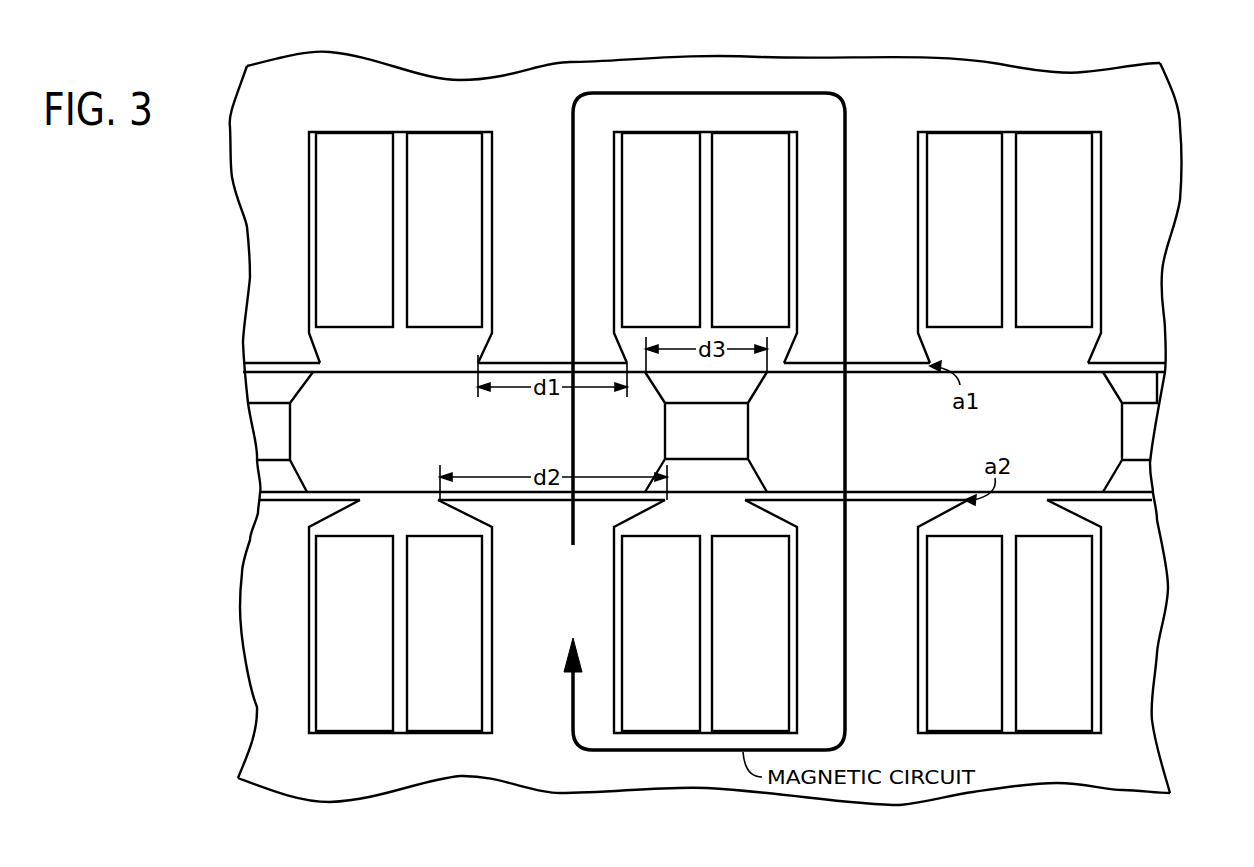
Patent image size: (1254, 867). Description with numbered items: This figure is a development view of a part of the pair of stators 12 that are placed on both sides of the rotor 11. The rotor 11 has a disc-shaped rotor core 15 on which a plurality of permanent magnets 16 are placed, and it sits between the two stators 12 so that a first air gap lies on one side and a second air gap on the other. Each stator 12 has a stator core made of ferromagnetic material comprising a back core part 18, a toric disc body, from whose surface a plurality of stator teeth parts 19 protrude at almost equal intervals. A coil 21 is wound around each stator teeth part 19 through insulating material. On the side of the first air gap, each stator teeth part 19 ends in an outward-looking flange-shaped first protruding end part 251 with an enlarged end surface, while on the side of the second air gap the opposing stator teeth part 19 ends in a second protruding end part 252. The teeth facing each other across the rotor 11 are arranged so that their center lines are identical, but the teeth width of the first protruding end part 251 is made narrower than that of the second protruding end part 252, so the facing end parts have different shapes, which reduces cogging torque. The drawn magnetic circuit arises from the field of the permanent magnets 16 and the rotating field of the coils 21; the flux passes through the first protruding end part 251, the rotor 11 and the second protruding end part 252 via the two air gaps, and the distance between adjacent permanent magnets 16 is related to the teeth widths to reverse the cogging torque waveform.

The rotor 11 is at (709, 429).
The stator 12 is at (717, 428).
The rotor core 15 is at (250, 382).
The permanent magnet 16 is at (300, 440).
The back core part 18 is at (1165, 117).
The stator teeth part 19 is at (707, 432).
The coil 21 is at (357, 140).
The first protruding end part 251 is at (545, 355).
The second protruding end part 252 is at (873, 510).